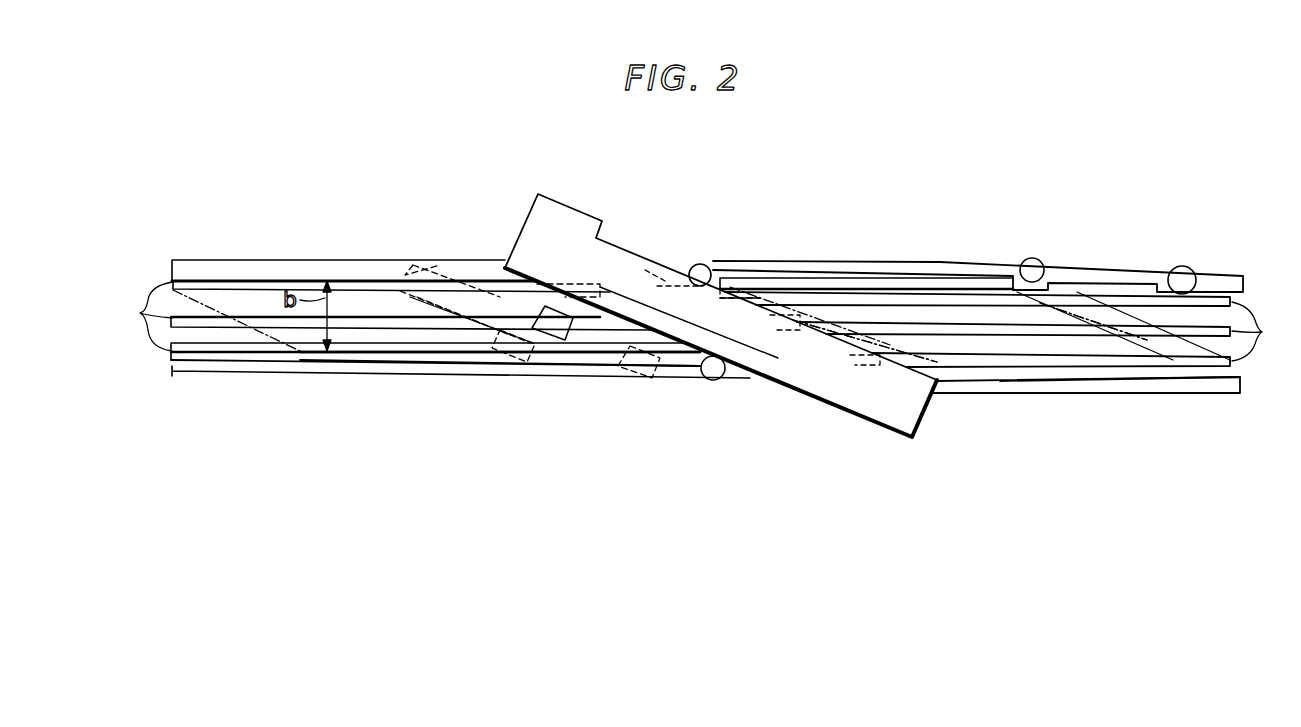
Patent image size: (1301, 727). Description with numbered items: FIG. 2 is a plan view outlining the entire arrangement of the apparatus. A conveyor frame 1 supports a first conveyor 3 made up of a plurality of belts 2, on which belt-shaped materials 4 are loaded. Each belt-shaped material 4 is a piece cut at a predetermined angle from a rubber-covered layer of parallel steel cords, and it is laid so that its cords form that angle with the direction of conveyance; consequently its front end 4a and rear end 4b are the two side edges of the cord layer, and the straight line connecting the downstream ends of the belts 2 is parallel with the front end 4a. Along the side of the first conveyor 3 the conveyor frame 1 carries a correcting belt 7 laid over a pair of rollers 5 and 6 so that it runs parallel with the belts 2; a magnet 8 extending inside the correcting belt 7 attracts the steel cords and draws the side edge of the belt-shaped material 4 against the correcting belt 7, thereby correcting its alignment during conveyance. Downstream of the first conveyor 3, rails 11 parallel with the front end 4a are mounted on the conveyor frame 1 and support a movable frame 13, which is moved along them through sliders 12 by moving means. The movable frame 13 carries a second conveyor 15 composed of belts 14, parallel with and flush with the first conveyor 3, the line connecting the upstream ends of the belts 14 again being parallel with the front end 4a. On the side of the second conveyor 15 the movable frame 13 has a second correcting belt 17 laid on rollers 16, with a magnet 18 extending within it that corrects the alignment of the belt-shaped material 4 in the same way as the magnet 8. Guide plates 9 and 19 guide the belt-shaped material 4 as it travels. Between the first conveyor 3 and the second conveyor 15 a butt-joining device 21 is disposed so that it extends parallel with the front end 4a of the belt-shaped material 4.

The conveyor frame 1 is at (1125, 390).
The belts 2 is at (1007, 329).
The first conveyor 3 is at (1058, 376).
The belt-shaped materials 4 is at (283, 281).
The front end 4a is at (847, 343).
The rear end 4b is at (1138, 313).
The roller 5 is at (700, 264).
The roller 6 is at (1182, 266).
The correcting belt 7 is at (1112, 266).
The magnet 8 is at (960, 283).
The guide plate 9 is at (663, 271).
The rails 11 is at (575, 345).
The sliders 12 is at (517, 355).
The movable frame 13 is at (368, 262).
The belts 14 is at (405, 323).
The second conveyor 15 is at (380, 361).
The rollers 16 is at (713, 380).
The correcting belt 17 is at (469, 378).
The magnet 18 is at (427, 360).
The guide plate 19 is at (776, 362).
The butt-joining device 21 is at (588, 214).